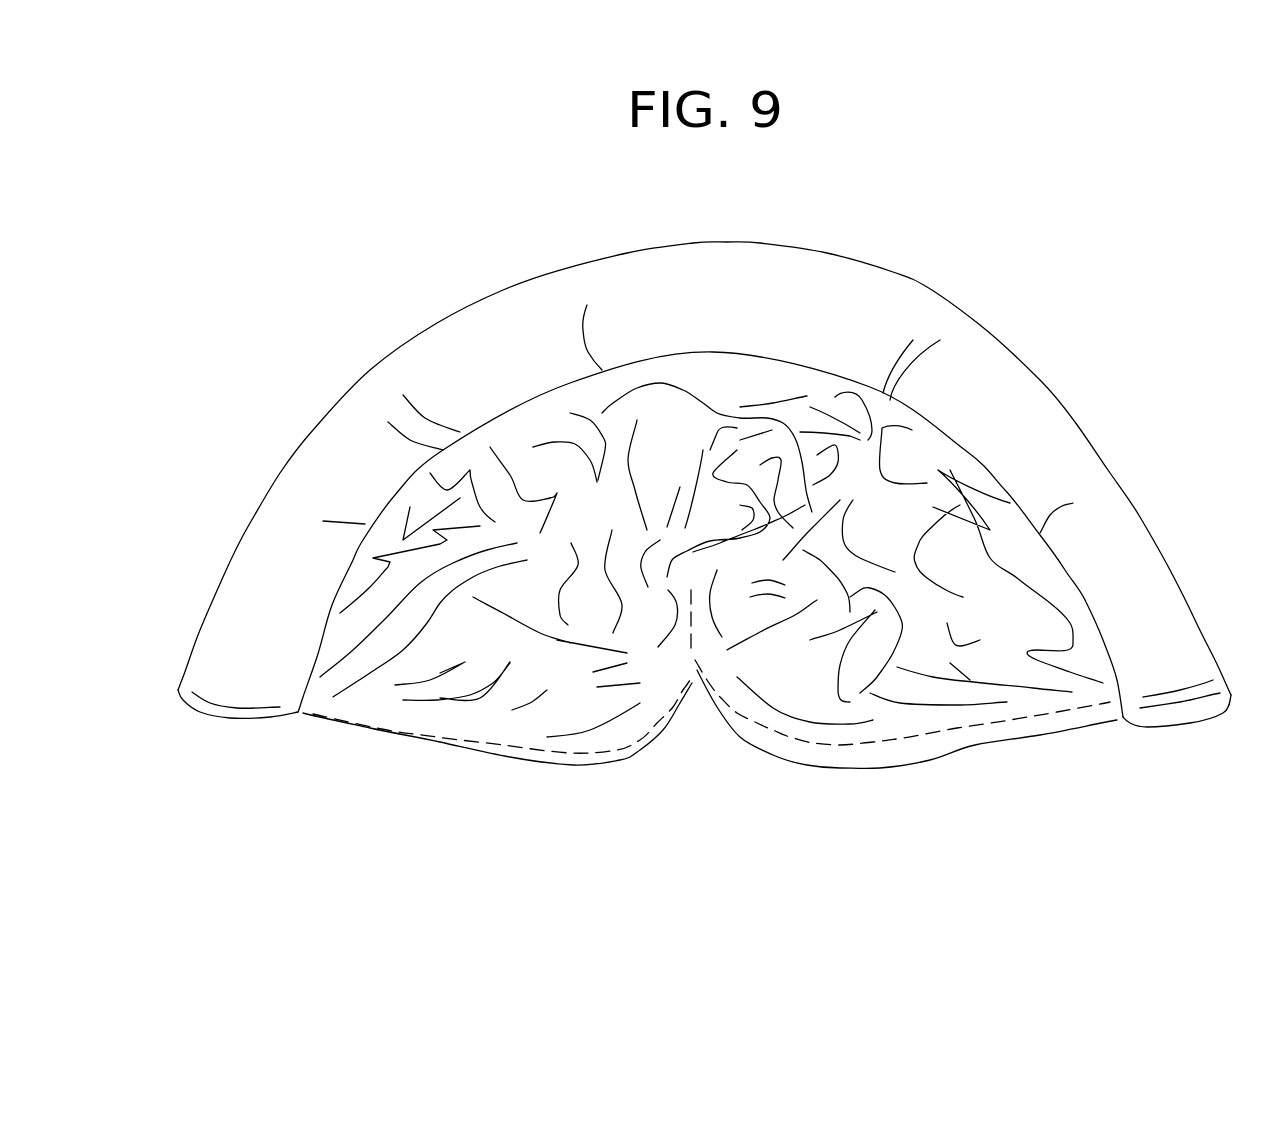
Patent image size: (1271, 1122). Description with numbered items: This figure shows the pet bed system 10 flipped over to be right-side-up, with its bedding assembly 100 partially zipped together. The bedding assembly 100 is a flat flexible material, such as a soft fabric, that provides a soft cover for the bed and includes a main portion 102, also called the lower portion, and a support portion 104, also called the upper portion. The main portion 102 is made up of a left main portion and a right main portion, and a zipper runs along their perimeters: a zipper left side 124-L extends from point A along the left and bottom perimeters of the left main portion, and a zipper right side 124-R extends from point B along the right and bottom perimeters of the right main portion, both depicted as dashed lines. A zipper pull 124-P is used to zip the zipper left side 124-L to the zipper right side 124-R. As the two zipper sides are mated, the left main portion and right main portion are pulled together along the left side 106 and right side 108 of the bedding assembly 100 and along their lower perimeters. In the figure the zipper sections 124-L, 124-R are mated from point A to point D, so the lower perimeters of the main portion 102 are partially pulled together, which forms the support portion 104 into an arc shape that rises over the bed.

The pet bed system 10 is at (659, 556).
The bedding assembly 100 is at (719, 489).
The main portion 102 is at (795, 645).
The support portion 104 is at (523, 320).
The left side 106 is at (367, 753).
The right side 108 is at (1073, 762).
The zipper left side 124-L is at (437, 728).
The zipper pull 124-P is at (697, 663).
The zipper right side 124-R is at (917, 738).